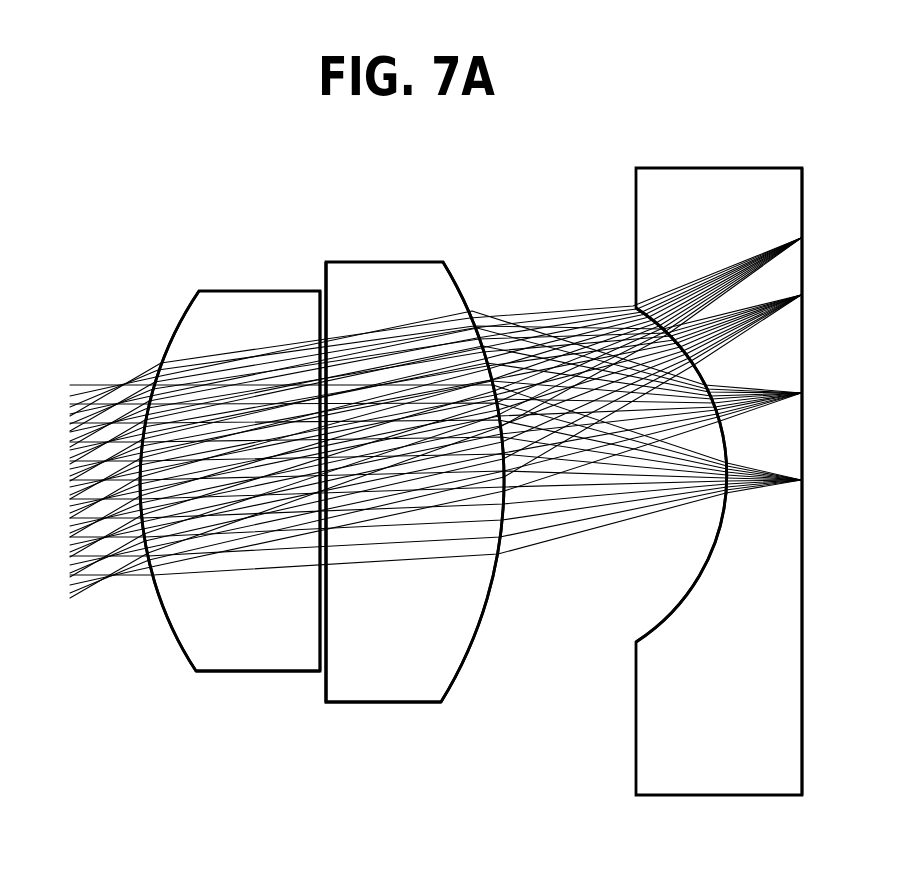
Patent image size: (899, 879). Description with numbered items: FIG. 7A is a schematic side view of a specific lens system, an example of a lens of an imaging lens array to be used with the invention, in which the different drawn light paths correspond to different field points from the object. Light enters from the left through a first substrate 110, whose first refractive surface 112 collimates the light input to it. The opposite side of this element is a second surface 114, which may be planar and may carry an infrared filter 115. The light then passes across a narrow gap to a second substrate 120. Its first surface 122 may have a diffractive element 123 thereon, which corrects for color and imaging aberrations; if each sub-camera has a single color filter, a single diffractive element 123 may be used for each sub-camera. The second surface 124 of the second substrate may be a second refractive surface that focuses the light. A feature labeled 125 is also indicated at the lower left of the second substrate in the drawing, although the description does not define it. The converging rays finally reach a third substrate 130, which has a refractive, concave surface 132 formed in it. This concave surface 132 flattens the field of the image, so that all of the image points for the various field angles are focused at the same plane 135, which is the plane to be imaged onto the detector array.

The first substrate 110 is at (219, 290).
The first refractive surface 112 is at (175, 331).
The second surface 114 is at (305, 276).
The infrared filter 115 is at (318, 673).
The second substrate 120 is at (430, 261).
The first surface 122 is at (328, 238).
The diffractive element 123 is at (328, 562).
The second surface 124 is at (468, 647).
The edge of second lens 125 is at (327, 640).
The third substrate 130 is at (712, 167).
The concave surface 132 is at (706, 565).
The plane 135 is at (782, 205).